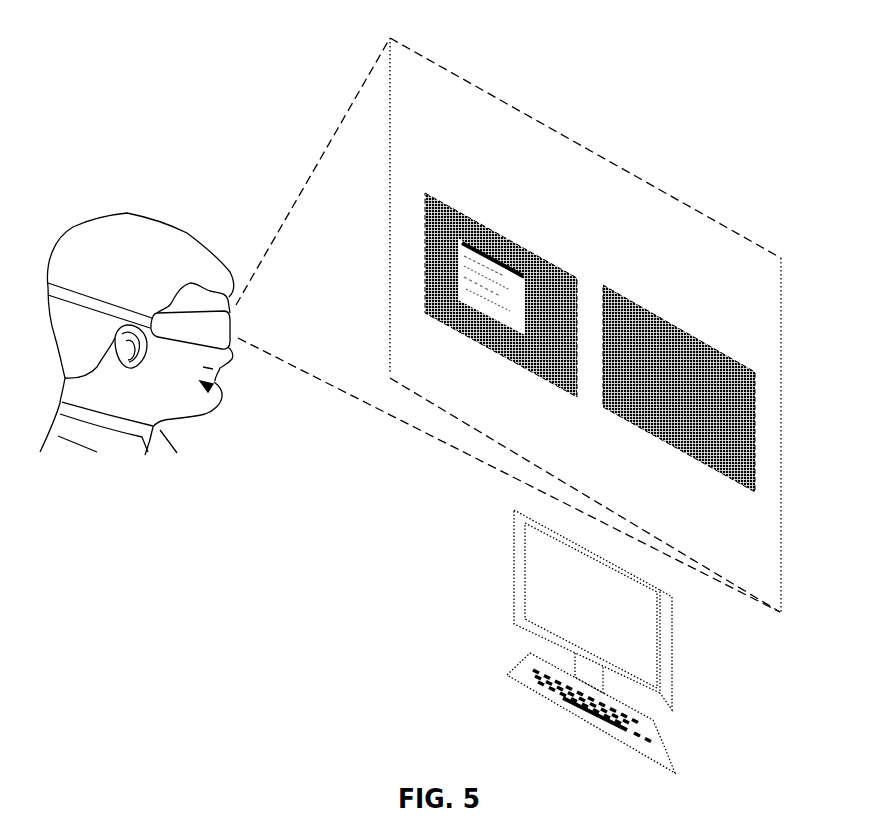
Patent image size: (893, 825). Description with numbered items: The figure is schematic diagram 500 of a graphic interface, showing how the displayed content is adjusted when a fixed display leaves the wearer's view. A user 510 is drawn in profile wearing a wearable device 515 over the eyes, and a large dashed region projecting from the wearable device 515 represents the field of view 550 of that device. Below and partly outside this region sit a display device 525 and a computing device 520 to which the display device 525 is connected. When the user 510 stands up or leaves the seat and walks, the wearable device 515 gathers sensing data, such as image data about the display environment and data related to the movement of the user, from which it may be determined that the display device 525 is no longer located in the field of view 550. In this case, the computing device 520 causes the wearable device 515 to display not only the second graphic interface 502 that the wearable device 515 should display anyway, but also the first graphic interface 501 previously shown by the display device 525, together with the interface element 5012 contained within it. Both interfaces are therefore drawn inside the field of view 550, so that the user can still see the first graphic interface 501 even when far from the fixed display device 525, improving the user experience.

The schematic diagram 500 is at (143, 54).
The user 510 is at (157, 217).
The wearable device 515 is at (224, 331).
The field of view 550 is at (733, 233).
The first graphic interface 501 is at (501, 295).
The second graphic interface 502 is at (679, 388).
The interface element 5012 is at (514, 318).
The display device 525 is at (654, 615).
The computing device 520 is at (654, 758).